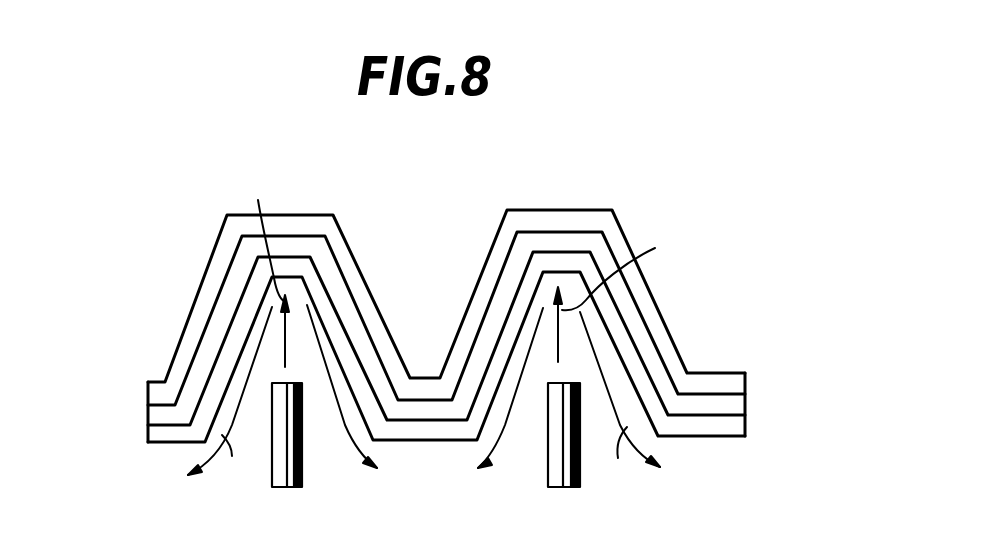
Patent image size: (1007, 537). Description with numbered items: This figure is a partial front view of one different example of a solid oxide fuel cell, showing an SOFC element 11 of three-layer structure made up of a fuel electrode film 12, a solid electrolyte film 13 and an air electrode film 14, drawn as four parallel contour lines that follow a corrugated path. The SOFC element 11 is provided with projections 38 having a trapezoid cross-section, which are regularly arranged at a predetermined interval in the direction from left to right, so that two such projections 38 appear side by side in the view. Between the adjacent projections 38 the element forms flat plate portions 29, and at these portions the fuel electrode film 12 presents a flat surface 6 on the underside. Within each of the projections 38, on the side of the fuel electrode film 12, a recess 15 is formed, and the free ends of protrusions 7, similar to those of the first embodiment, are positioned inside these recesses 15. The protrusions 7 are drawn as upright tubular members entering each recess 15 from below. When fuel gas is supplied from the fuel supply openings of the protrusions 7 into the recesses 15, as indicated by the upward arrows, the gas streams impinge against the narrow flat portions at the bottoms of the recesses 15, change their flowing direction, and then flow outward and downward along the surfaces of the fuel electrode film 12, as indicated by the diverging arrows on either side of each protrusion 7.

The flat surface 6 is at (433, 443).
The protrusions 7 is at (302, 433).
The SOFC element 11 is at (475, 305).
The fuel electrode film 12 is at (740, 424).
The solid electrolyte film 13 is at (740, 404).
The air electrode film 14 is at (740, 382).
The recesses 15 is at (322, 328).
The flat plate portions 29 is at (428, 402).
The projections 38 is at (339, 236).